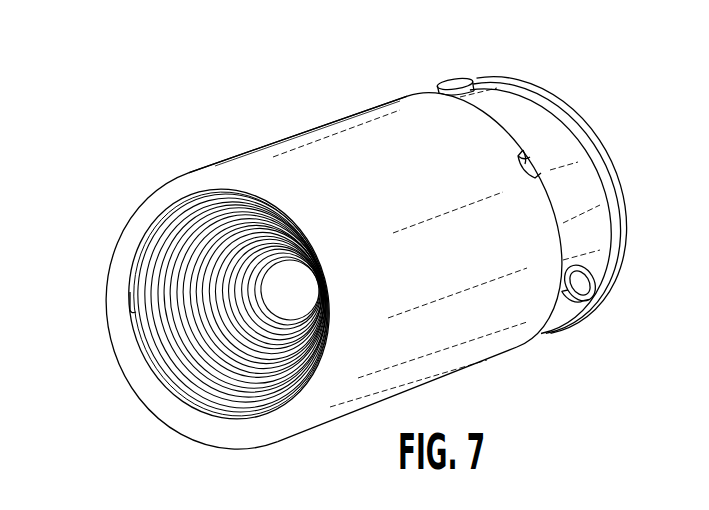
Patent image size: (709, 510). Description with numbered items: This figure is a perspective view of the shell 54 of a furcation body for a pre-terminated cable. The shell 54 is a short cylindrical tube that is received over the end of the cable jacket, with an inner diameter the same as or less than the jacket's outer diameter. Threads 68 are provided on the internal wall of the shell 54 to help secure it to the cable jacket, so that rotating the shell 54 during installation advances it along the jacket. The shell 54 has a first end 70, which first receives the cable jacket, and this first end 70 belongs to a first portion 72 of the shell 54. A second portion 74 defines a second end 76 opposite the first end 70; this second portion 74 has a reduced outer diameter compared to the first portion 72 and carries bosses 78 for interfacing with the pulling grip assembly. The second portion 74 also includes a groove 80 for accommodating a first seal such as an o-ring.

The shell 54 is at (323, 89).
The threads 68 is at (178, 330).
The first end 70 is at (173, 190).
The first portion 72 is at (263, 139).
The second portion 74 is at (533, 94).
The second end 76 is at (587, 118).
The bosses 78 is at (455, 77).
The groove 80 is at (600, 150).